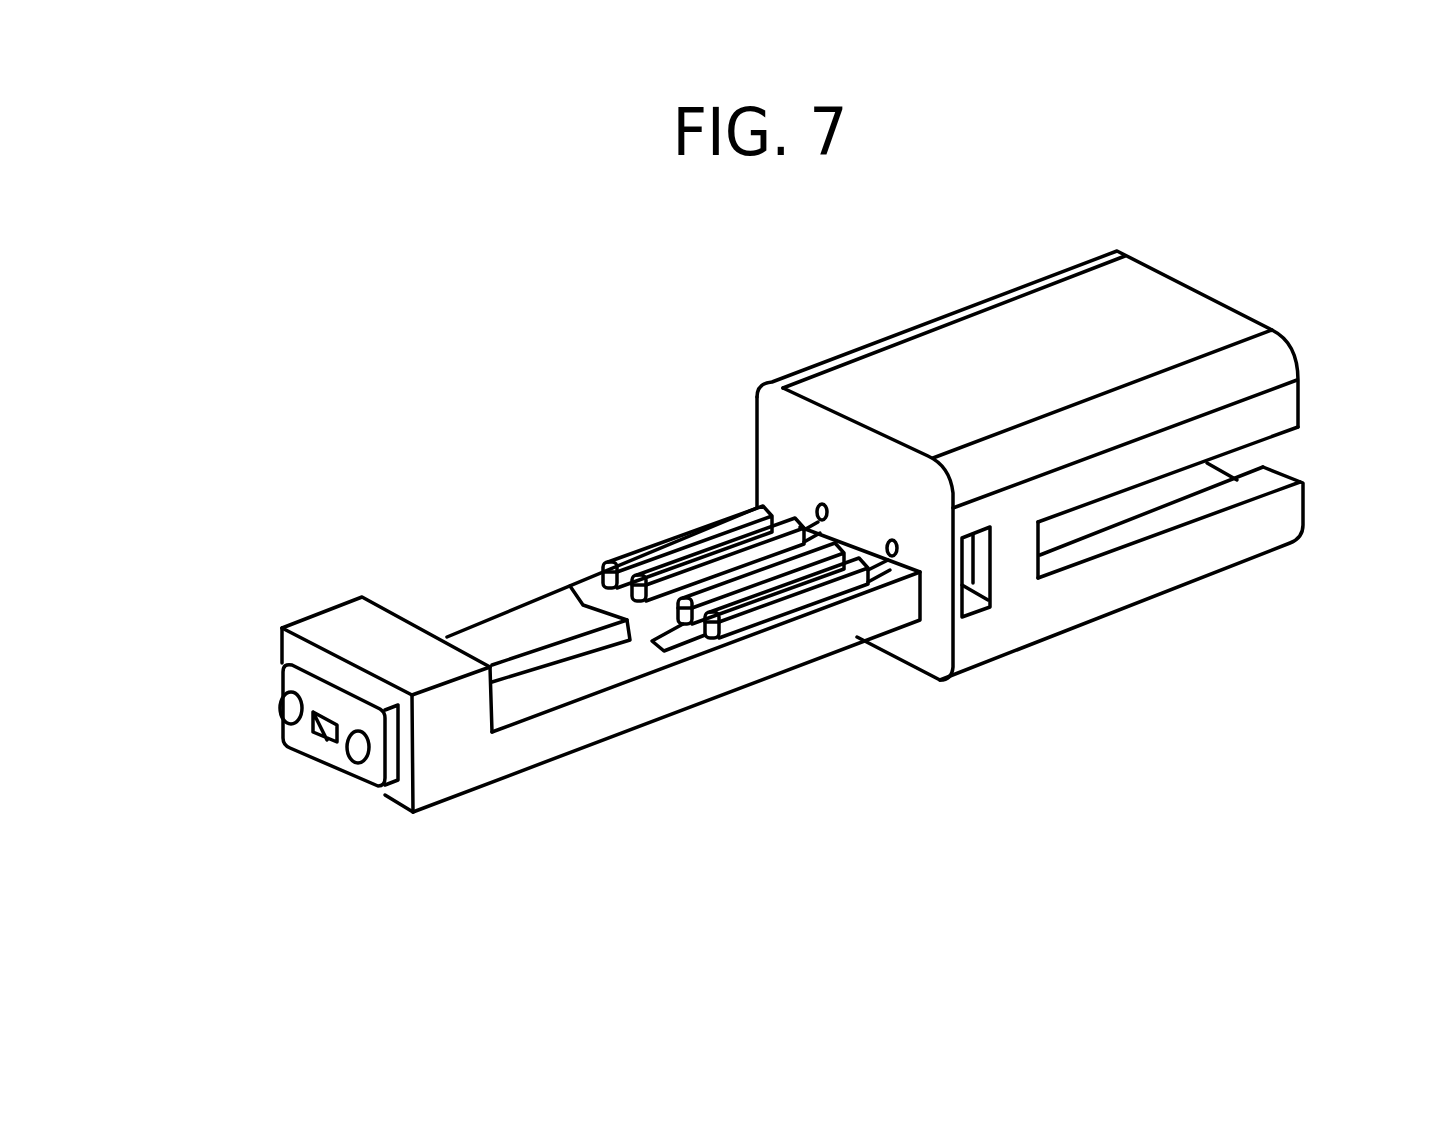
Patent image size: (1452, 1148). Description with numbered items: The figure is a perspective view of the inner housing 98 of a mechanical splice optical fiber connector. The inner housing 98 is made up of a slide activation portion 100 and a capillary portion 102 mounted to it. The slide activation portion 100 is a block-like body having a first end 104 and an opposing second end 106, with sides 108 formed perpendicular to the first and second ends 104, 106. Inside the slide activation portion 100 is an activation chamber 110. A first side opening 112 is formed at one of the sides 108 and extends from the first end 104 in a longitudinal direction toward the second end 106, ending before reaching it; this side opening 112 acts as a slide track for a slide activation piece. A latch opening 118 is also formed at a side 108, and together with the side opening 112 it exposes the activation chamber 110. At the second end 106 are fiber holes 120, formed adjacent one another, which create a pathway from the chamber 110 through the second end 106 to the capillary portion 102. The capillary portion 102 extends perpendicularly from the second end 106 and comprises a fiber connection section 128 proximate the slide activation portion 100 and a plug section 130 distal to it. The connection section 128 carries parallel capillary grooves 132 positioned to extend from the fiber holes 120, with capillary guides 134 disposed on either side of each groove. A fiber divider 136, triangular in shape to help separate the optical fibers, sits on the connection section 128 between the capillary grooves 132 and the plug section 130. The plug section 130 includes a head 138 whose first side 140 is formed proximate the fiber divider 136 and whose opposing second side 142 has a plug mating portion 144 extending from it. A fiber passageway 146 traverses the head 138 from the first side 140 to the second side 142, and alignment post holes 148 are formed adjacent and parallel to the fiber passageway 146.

The inner housing 98 is at (318, 374).
The slide activation portion 100 is at (945, 315).
The capillary portion 102 is at (588, 578).
The first end 104 is at (1190, 286).
The second end 106 is at (785, 448).
The sides 108 is at (1053, 320).
The activation chamber 110 is at (1275, 453).
The first side opening 112 is at (1208, 503).
The latch opening 118 is at (973, 613).
The fiber holes 120 is at (822, 500).
The fiber connection section 128 is at (682, 530).
The plug section 130 is at (330, 652).
The capillary grooves 132 is at (680, 640).
The capillary guides 134 is at (785, 605).
The fiber divider 136 is at (537, 643).
The head 138 is at (457, 747).
The first side 140 is at (493, 705).
The second side 142 is at (400, 793).
The plug mating portion 144 is at (332, 758).
The fiber passageway 146 is at (316, 735).
The alignment post holes 148 is at (290, 707).